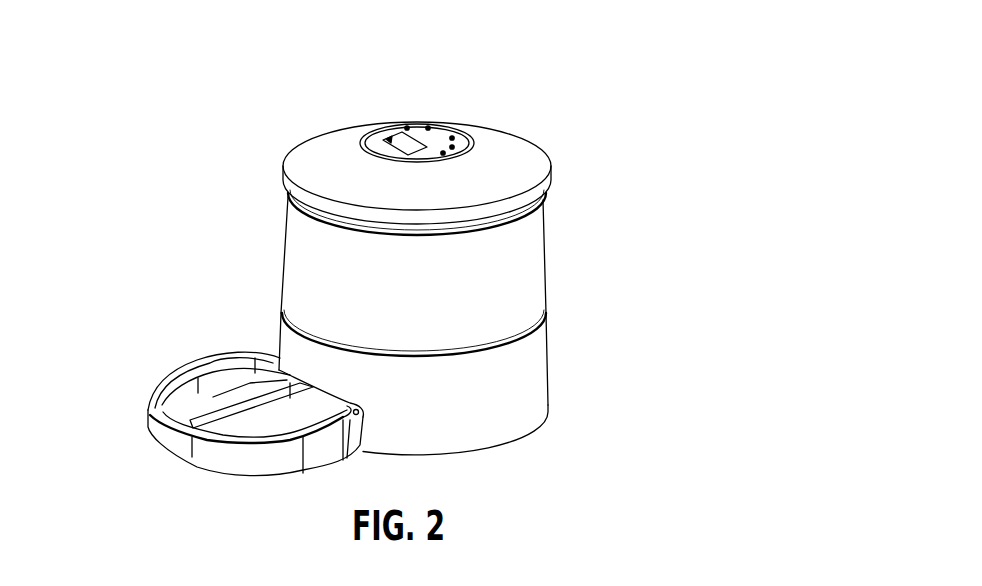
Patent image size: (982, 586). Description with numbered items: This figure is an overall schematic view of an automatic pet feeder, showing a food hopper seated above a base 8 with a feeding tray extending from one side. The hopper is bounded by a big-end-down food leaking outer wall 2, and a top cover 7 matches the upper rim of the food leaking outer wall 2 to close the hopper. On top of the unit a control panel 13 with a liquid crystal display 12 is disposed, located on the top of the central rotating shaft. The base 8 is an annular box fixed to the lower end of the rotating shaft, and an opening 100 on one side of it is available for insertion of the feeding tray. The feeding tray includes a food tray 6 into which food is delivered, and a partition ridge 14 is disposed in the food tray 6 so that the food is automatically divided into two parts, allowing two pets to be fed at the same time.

The opening 100 is at (338, 276).
The food leaking outer wall 2 is at (520, 305).
The food tray 6 is at (170, 433).
The top cover 7 is at (463, 119).
The base 8 is at (527, 413).
The liquid crystal display 12 is at (392, 130).
The control panel 13 is at (437, 143).
The partition ridge 14 is at (228, 387).